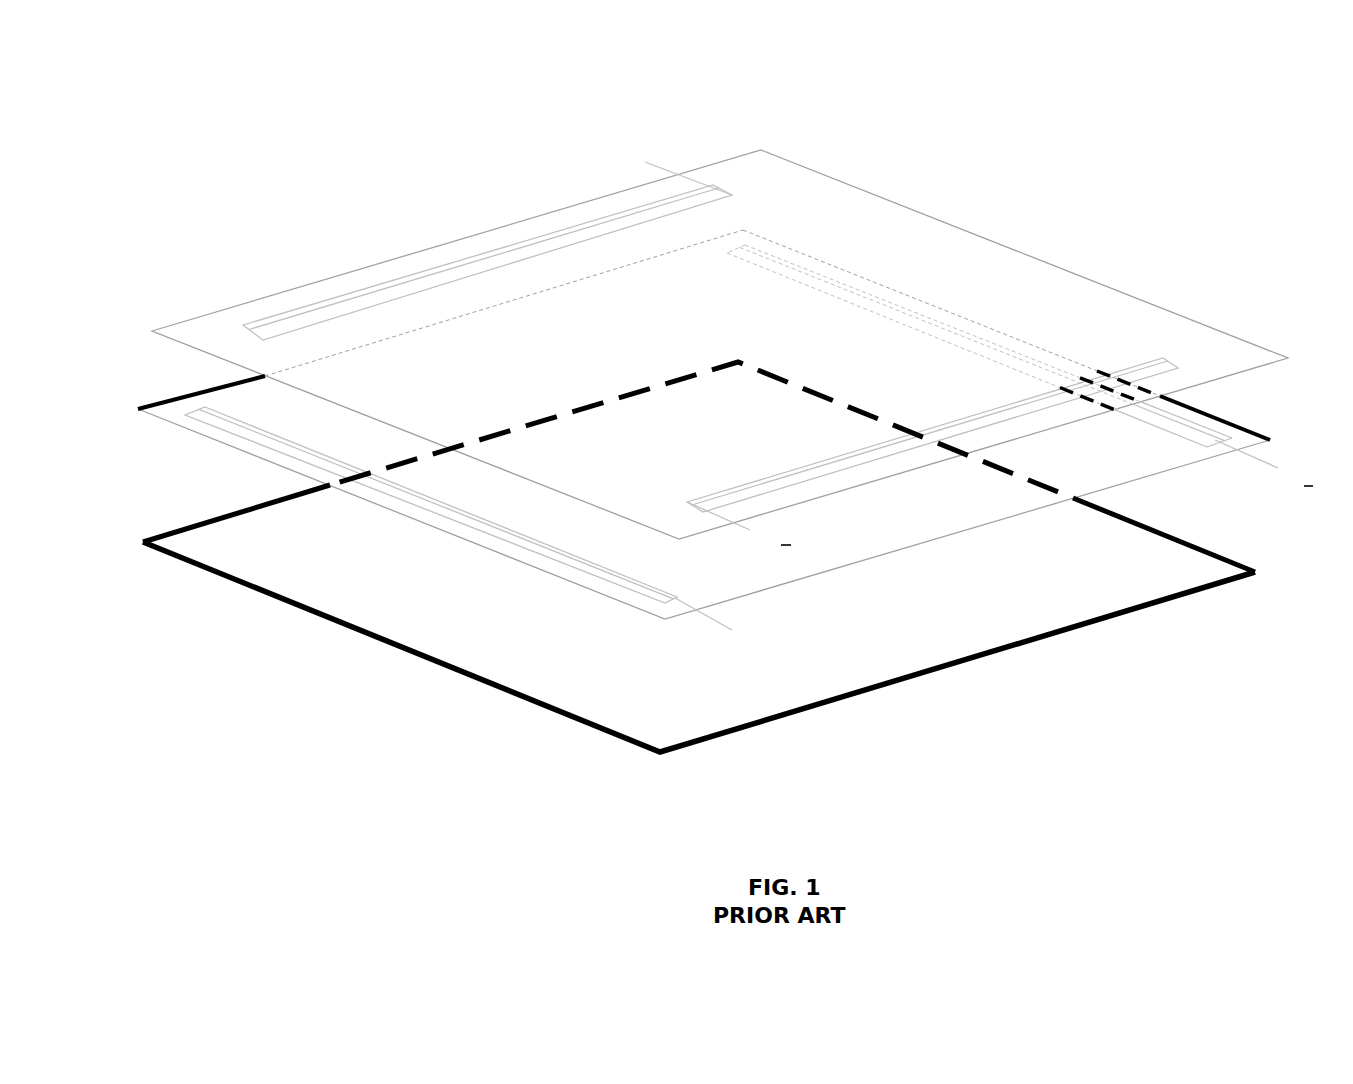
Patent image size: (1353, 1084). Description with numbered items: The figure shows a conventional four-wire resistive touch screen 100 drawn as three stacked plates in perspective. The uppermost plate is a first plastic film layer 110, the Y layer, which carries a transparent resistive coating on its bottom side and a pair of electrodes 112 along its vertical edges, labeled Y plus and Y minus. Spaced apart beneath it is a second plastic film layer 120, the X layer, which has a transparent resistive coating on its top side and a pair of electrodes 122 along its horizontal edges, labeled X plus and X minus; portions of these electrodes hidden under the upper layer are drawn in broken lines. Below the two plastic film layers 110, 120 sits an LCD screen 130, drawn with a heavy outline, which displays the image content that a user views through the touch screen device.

The 4-wire resistive touch screen 100 is at (250, 92).
The first plastic film layer 110 is at (720, 336).
The electrodes 112 is at (875, 448).
The second plastic film layer 120 is at (719, 428).
The electrodes 122 is at (869, 296).
The LCD screen 130 is at (642, 753).